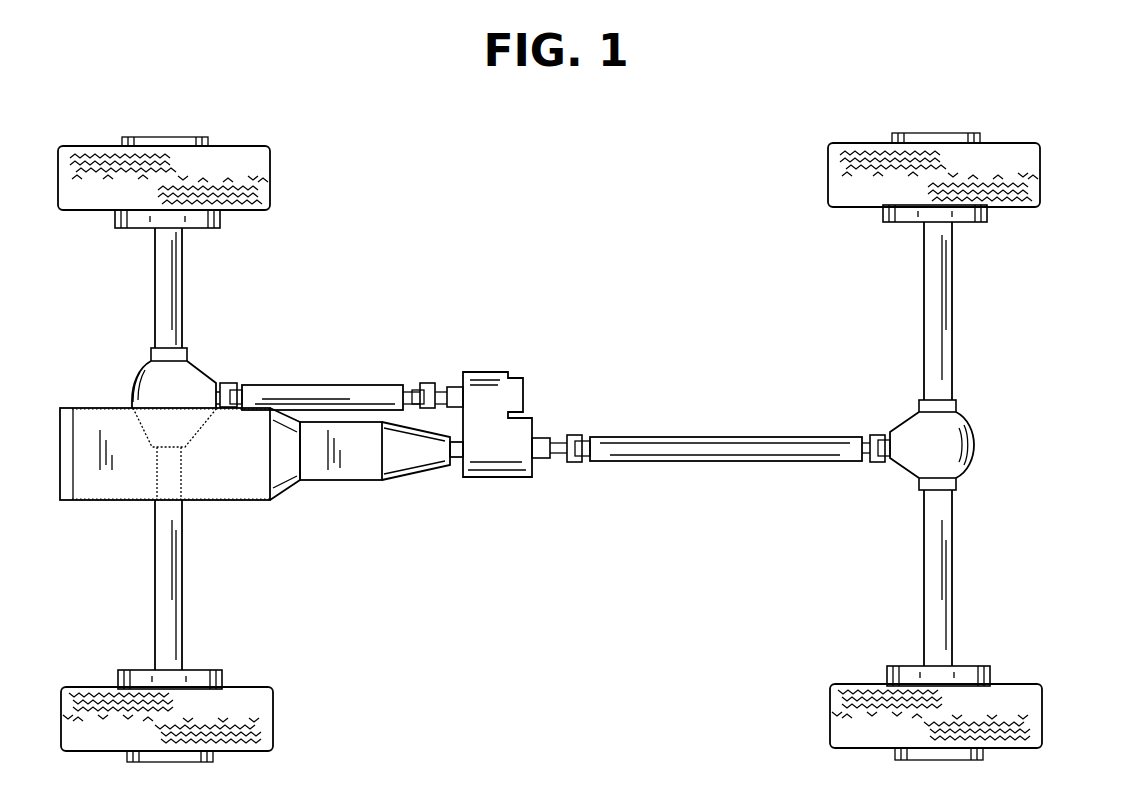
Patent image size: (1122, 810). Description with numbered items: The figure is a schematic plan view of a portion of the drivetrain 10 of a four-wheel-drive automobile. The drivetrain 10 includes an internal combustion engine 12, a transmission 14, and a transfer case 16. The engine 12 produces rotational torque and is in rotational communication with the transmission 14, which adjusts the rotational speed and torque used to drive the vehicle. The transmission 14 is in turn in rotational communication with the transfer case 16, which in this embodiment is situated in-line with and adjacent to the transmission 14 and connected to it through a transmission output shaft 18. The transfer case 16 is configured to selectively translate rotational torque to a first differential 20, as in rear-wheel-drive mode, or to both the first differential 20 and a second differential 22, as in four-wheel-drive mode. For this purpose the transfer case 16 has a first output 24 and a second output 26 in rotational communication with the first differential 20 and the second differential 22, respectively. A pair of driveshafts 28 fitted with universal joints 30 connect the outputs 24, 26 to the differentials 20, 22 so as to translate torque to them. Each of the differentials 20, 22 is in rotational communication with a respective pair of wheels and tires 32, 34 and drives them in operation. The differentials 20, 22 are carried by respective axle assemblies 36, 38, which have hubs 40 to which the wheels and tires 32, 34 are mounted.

The drivetrain 10 is at (986, 97).
The internal combustion engine 12 is at (165, 454).
The transmission 14 is at (366, 454).
The transfer case 16 is at (497, 424).
The transmission output shaft 18 is at (458, 460).
The first differential 20 is at (932, 445).
The second differential 22 is at (174, 378).
The first output 24 is at (542, 442).
The second output 26 is at (456, 386).
The driveshafts 28 is at (317, 394).
The universal joints 30 is at (226, 383).
The wheels and tires 32 is at (1028, 158).
The wheels and tires 34 is at (256, 162).
The axle assembly 36 is at (934, 352).
The axle assembly 38 is at (160, 300).
The hubs 40 is at (194, 222).